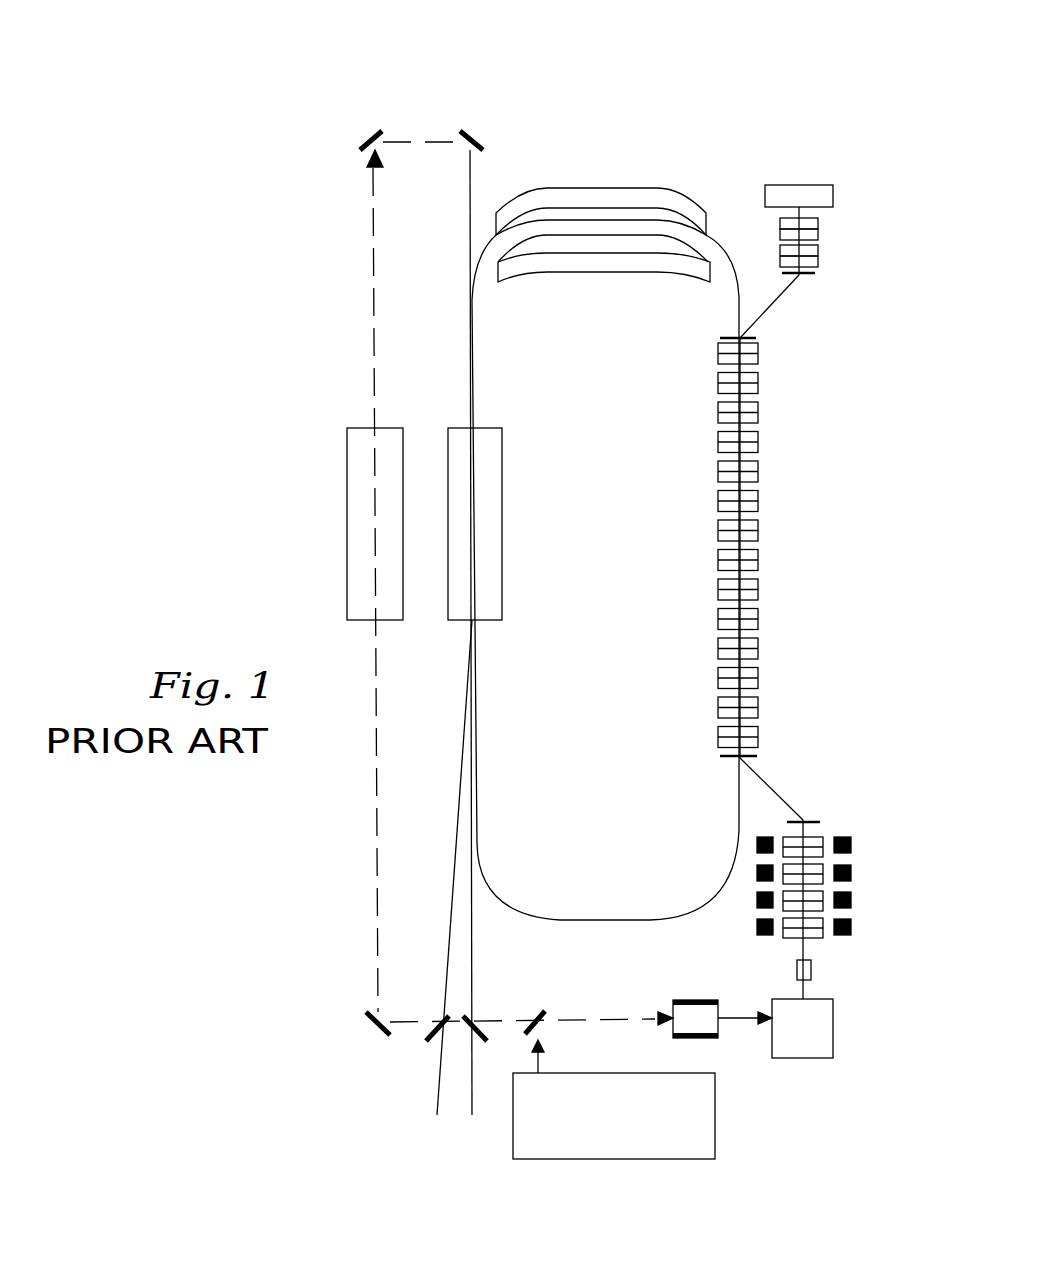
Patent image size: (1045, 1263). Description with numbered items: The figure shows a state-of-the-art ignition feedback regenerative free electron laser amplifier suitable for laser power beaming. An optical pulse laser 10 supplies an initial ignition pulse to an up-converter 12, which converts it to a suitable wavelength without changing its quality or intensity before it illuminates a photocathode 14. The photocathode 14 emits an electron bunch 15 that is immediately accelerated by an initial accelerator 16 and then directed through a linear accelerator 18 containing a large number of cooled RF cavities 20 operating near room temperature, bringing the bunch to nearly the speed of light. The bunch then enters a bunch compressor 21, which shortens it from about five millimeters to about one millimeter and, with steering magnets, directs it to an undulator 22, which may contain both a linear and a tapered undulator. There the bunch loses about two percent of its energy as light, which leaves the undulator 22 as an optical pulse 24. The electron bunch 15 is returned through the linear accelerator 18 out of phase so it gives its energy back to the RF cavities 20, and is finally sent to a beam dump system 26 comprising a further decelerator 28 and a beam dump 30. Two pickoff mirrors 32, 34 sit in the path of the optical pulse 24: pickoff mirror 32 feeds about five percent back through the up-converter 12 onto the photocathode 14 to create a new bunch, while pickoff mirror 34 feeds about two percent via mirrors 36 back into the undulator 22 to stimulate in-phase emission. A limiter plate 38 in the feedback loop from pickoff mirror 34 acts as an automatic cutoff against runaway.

The optical pulse laser 10 is at (586, 1123).
The up-converter 12 is at (693, 1000).
The photocathode 14 is at (786, 1042).
The electron bunch 15 is at (797, 972).
The initial accelerator 16 is at (742, 893).
The linear accelerator 18 is at (705, 709).
The RF cavities 20 is at (716, 443).
The bunch compressor 21 is at (612, 235).
The undulator 22 is at (502, 463).
The optical pulse 24 is at (465, 927).
The beam dump system 26 is at (768, 230).
The further decelerator 28 is at (818, 258).
The beam dump 30 is at (799, 185).
The pickoff mirror 32 is at (484, 1020).
The pickoff mirror 34 is at (430, 1020).
The mirrors 36 is at (477, 130).
The limiter plate 38 is at (347, 497).